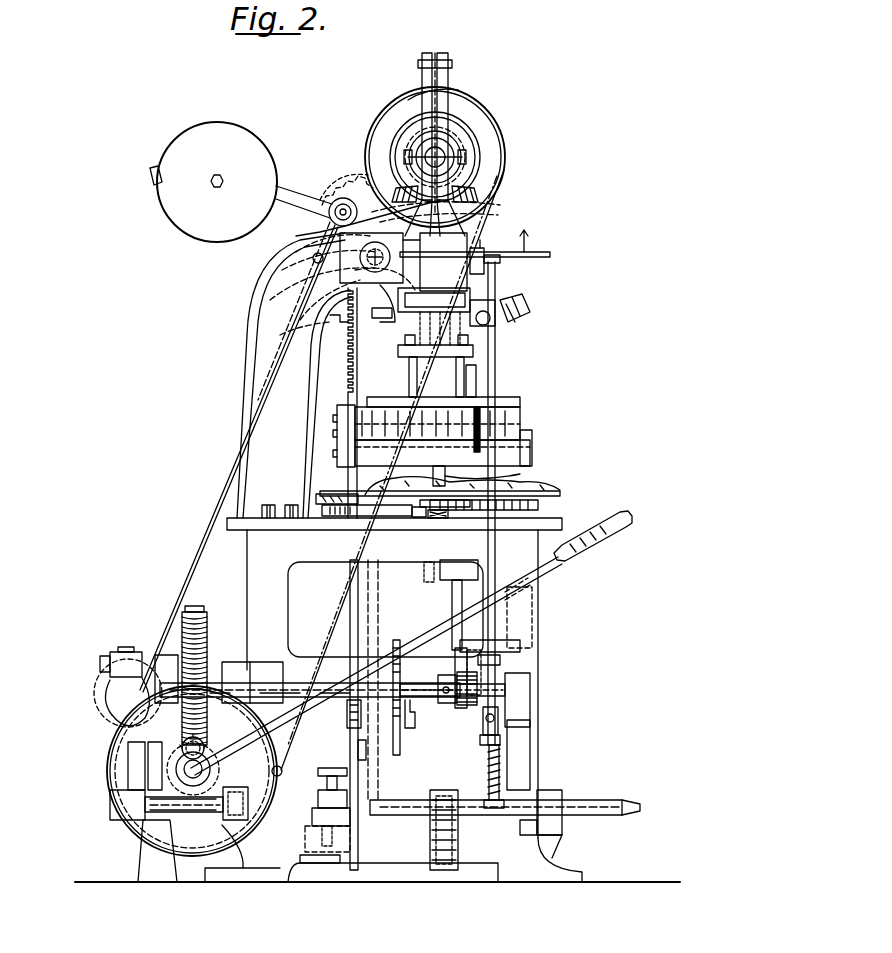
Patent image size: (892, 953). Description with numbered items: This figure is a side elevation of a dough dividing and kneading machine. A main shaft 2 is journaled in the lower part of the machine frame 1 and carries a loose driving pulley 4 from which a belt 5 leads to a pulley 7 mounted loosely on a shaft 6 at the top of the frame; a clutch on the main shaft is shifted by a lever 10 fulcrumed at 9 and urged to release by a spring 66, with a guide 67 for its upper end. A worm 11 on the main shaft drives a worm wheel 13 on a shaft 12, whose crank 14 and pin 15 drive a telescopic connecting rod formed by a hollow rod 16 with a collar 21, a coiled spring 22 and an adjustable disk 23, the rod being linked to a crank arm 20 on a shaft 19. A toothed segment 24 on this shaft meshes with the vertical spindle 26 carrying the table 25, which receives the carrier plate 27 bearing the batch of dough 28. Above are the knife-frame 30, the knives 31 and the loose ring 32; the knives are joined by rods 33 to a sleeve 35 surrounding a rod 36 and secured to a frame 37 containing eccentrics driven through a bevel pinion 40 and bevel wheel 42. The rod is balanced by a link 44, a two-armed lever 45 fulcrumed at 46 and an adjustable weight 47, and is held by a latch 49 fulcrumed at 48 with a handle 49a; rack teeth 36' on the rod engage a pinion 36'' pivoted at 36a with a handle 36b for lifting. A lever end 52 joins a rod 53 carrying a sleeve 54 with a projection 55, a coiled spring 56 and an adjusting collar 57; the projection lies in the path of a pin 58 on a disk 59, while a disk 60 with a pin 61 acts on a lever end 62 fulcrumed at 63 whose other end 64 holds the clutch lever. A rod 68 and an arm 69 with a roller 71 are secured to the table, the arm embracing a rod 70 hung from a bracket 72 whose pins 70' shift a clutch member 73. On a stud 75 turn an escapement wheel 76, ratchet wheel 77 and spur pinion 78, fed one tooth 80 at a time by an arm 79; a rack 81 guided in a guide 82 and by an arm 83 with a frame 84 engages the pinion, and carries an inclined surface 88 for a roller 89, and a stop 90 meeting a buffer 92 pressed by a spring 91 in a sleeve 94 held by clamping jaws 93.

The machine frame 1 is at (248, 556).
The main shaft 2 is at (192, 790).
The driving pulley 4 is at (128, 818).
The belt 5 is at (208, 512).
The shaft 6 is at (460, 147).
The pulley 7 is at (455, 156).
The fulcrum 9 is at (176, 766).
The lever 10 is at (572, 565).
The worm 11 is at (183, 746).
The shaft 12 is at (296, 684).
The worm wheel 13 is at (204, 610).
The crank 14 is at (166, 656).
The pin 15 is at (110, 664).
The rod 16 is at (100, 665).
The shaft 19 is at (226, 815).
The crank arm 20 is at (128, 765).
The collar 21 is at (108, 690).
The coiled spring 22 is at (118, 712).
The disk 23 is at (104, 726).
The toothed segment 24 is at (450, 850).
The table 25 is at (540, 506).
The vertical spindle 26 is at (452, 612).
The carrier plate 27 is at (545, 488).
The batch of dough 28 is at (370, 500).
The knife-frame 30 is at (510, 402).
The knives 31 is at (355, 428).
The ring 32 is at (532, 442).
The rods 33 is at (464, 375).
The sleeve 35 is at (412, 338).
The rod 36 is at (512, 381).
The rack teeth 36' is at (535, 361).
The pinion 36'' is at (535, 339).
The pivot 36a is at (484, 316).
The handle 36b is at (520, 304).
The frame 37 is at (490, 340).
The bevel pinion 40 is at (486, 196).
The bevel wheel 42 is at (455, 136).
The link 44 is at (490, 220).
The two-armed lever 45 is at (292, 193).
The fulcrum 46 is at (350, 186).
The adjustable weight 47 is at (230, 128).
The fulcrum 48 is at (508, 237).
The latch 49 is at (512, 302).
The handle 49a is at (560, 256).
The lever end 52 is at (490, 278).
The rod 53 is at (492, 352).
The sleeve 54 is at (498, 738).
The projection 55 is at (520, 720).
The coiled spring 56 is at (486, 768).
The adjusting collar 57 is at (500, 820).
The pin 58 is at (500, 662).
The disk 59 is at (468, 706).
The disk 60 is at (392, 645).
The pin 61 is at (420, 694).
The lever end 62 is at (402, 690).
The fulcrum 63 is at (414, 730).
The lever end 64 is at (402, 650).
The spring 66 is at (572, 542).
The guide 67 is at (545, 598).
The rod 68 is at (485, 620).
The arm 69 is at (430, 520).
The rod 70 is at (486, 474).
The pins 70' is at (447, 139).
The roller 71 is at (412, 568).
The bracket 72 is at (446, 82).
The clutch member 73 is at (410, 104).
The stud 75 is at (310, 283).
The escapement wheel 76 is at (310, 228).
The ratchet wheel 77 is at (292, 334).
The spur pinion 78 is at (280, 305).
The arm 79 is at (362, 342).
The tooth 80 is at (340, 197).
The rack 81 is at (348, 382).
The guide 82 is at (358, 870).
The arm 83 is at (345, 510).
The frame 84 is at (326, 493).
The inclined surface 88 is at (358, 745).
The roller 89 is at (347, 712).
The stop 90 is at (330, 768).
The spring 91 is at (322, 862).
The buffer 92 is at (327, 782).
The clamping jaws 93 is at (310, 828).
The sleeve 94 is at (348, 805).